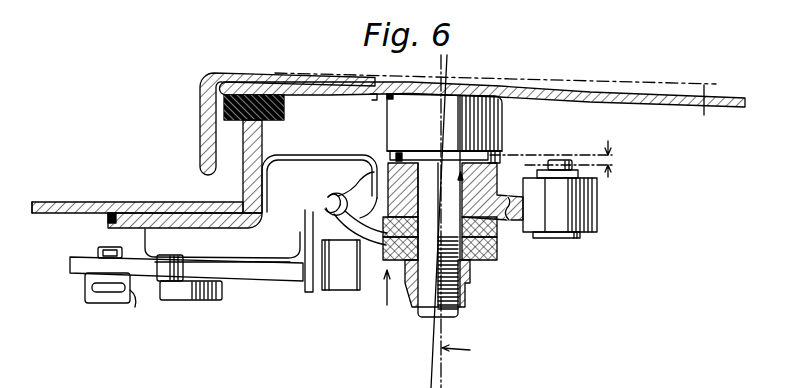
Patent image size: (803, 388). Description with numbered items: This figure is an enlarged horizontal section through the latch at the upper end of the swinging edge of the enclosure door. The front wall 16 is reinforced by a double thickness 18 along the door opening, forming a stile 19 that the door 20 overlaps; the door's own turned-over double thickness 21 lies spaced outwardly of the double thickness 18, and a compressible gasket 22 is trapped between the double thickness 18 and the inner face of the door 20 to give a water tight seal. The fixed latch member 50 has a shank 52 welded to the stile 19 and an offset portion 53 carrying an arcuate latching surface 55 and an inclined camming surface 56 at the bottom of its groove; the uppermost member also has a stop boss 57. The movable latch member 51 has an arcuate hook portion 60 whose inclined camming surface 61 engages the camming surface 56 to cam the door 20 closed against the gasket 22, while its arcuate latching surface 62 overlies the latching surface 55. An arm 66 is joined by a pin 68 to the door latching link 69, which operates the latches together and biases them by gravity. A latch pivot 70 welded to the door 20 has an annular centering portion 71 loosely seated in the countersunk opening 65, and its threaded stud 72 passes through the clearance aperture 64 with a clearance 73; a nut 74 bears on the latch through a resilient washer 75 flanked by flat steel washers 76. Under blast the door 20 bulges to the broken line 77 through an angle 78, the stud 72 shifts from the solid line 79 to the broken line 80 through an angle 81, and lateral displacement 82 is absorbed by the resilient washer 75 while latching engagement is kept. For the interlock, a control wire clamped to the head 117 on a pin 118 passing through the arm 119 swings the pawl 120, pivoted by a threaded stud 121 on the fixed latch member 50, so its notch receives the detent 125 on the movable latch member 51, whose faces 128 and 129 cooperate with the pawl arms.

The front wall 16 is at (39, 214).
The double thickness 18 is at (263, 138).
The stile 19 is at (131, 205).
The door 20 is at (491, 90).
The double thickness periphery 21 is at (203, 143).
The compressible gasket 22 is at (285, 110).
The fixed latch member 50 is at (299, 263).
The movable latch member 51 is at (395, 302).
The shank 52 is at (173, 238).
The offset portion 53 is at (313, 167).
The arcuate latching surface 55 is at (347, 188).
The inclined camming surface 56 is at (319, 183).
The stop boss 57 is at (175, 290).
The arcuate hook portion 60 is at (311, 212).
The inclined camming surface 61 is at (330, 196).
The arcuate latching surface 62 is at (356, 221).
The clearance aperture 64 is at (498, 170).
The countersunk opening 65 is at (401, 158).
The arm 66 is at (598, 213).
The pin 68 is at (578, 237).
The door latching link 69 is at (598, 188).
The latch pivot 70 is at (503, 119).
The annular centering portion 71 is at (427, 151).
The threaded stud 72 is at (472, 293).
The clearance 73 is at (460, 172).
The nut 74 is at (472, 282).
The resilient washer 75 is at (494, 234).
The flat steel washers 76 is at (498, 225).
The broken line 77 is at (676, 82).
The angle 78 is at (713, 88).
The solid line 79 is at (426, 351).
The broken line 80 is at (443, 378).
The angle 81 is at (469, 347).
The lateral shock absorbing displacement 82 is at (612, 158).
The head 117 is at (92, 298).
The pin 118 is at (103, 246).
The arm 119 is at (72, 265).
The pawl 120 is at (138, 300).
The threaded stud 121 is at (210, 301).
The detent 125 is at (334, 291).
The face 128 is at (313, 277).
The face 129 is at (358, 292).